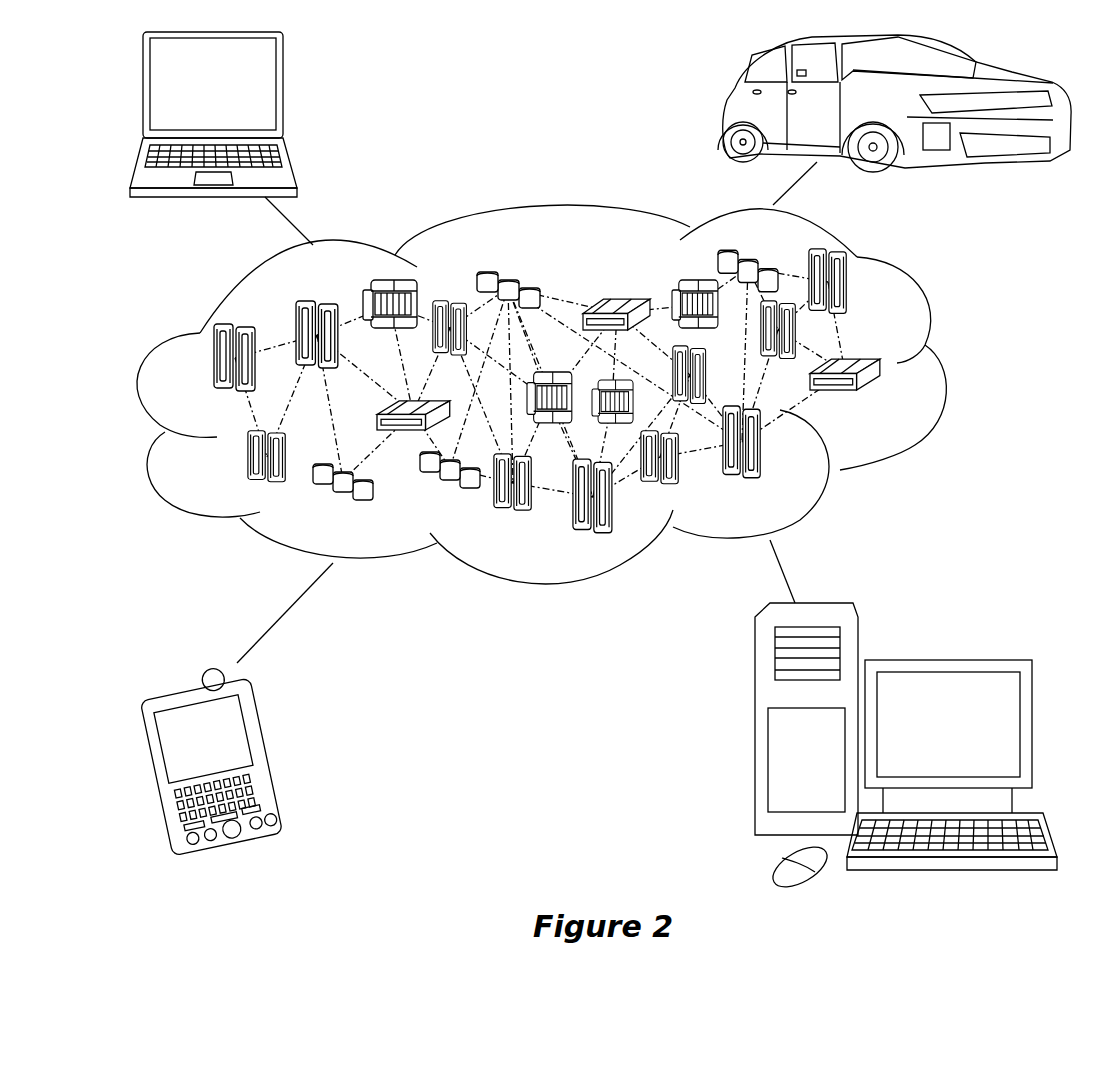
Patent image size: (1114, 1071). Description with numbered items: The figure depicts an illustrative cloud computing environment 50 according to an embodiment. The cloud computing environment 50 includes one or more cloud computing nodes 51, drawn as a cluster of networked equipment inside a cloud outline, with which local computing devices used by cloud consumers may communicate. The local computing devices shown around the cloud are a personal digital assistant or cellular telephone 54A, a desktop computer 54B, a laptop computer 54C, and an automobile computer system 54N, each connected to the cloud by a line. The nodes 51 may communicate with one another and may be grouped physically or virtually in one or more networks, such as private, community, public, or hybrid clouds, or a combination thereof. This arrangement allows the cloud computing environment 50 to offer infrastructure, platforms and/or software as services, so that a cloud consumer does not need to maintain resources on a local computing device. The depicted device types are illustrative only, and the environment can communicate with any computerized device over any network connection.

The cloud computing environment 50 is at (943, 369).
The cloud computing nodes 51 is at (605, 391).
The personal digital assistant or cellular telephone 54A is at (272, 756).
The desktop computer 54B is at (945, 660).
The laptop computer 54C is at (283, 93).
The automobile computer system 54N is at (725, 110).